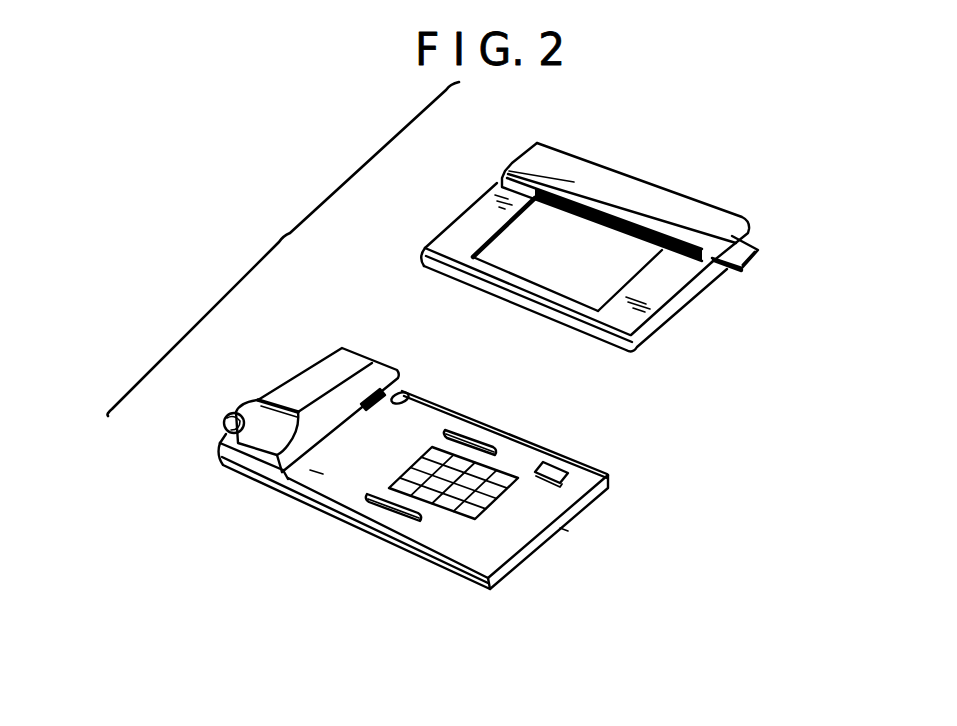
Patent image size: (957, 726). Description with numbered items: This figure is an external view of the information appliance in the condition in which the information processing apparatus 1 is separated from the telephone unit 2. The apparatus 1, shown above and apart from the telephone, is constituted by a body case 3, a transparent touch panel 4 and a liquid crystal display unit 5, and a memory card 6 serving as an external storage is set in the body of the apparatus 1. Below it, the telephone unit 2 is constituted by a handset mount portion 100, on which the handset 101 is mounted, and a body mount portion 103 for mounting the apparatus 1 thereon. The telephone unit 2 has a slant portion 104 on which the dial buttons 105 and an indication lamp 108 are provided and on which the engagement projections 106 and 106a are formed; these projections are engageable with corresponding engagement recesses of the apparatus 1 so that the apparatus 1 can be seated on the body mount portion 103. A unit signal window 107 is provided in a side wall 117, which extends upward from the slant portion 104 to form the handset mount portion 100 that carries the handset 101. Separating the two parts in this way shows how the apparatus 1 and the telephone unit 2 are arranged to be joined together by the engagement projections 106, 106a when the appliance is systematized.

The information processing apparatus 1 is at (492, 195).
The telephone unit 2 is at (296, 380).
The body case 3 is at (670, 196).
The transparent touch panel 4 is at (537, 262).
The liquid crystal display unit 5 is at (567, 272).
The memory card 6 is at (759, 247).
The handset mount portion 100 is at (238, 464).
The handset 101 is at (257, 401).
The body mount portion 103 is at (572, 531).
The slant portion 104 is at (502, 546).
The dial buttons 105 is at (440, 513).
The engagement projection 106 is at (373, 513).
The engagement projection 106a is at (486, 440).
The unit signal window 107 is at (403, 395).
The indication lamp 108 is at (560, 463).
The side wall 117 is at (292, 470).